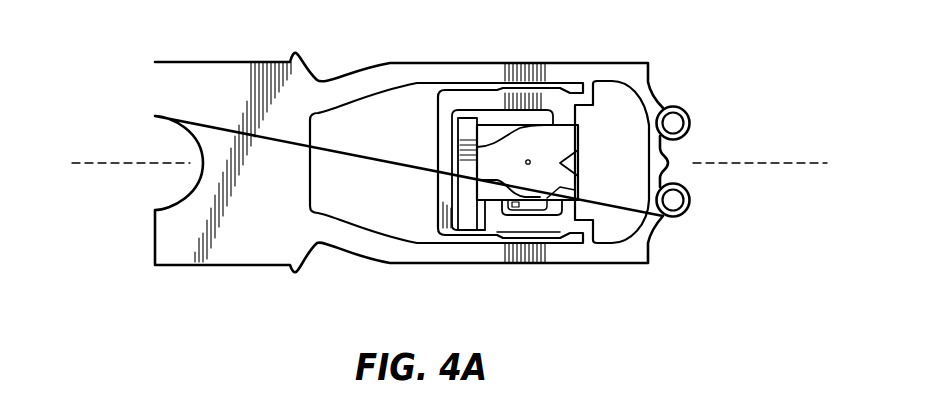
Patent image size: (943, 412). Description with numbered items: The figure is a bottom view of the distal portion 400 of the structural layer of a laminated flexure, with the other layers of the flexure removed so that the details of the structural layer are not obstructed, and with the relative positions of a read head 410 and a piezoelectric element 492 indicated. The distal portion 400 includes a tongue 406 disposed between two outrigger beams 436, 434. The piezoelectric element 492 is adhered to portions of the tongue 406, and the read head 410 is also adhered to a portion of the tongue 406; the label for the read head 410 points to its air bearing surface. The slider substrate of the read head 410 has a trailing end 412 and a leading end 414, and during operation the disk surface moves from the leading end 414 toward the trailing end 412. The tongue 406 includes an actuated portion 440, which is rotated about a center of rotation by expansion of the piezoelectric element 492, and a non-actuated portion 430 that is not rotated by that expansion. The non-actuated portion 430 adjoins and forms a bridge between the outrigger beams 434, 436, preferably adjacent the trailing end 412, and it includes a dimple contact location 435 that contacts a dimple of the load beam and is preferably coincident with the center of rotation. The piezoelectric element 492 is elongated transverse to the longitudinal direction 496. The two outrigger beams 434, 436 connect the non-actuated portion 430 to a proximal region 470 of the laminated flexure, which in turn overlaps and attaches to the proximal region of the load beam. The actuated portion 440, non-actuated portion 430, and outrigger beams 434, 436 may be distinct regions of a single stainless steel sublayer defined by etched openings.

The distal portion 400 is at (693, 107).
The tongue 406 is at (438, 157).
The read head 410 is at (558, 185).
The trailing end 412 is at (580, 133).
The leading end 414 is at (458, 180).
The non-actuated portion 430 is at (500, 225).
The outrigger beam 434 is at (475, 252).
The dimple contact location 435 is at (503, 120).
The outrigger beam 436 is at (468, 71).
The actuated portion 440 is at (528, 160).
The proximal region 470 is at (253, 248).
The piezoelectric element 492 is at (470, 220).
The longitudinal direction 496 is at (98, 163).